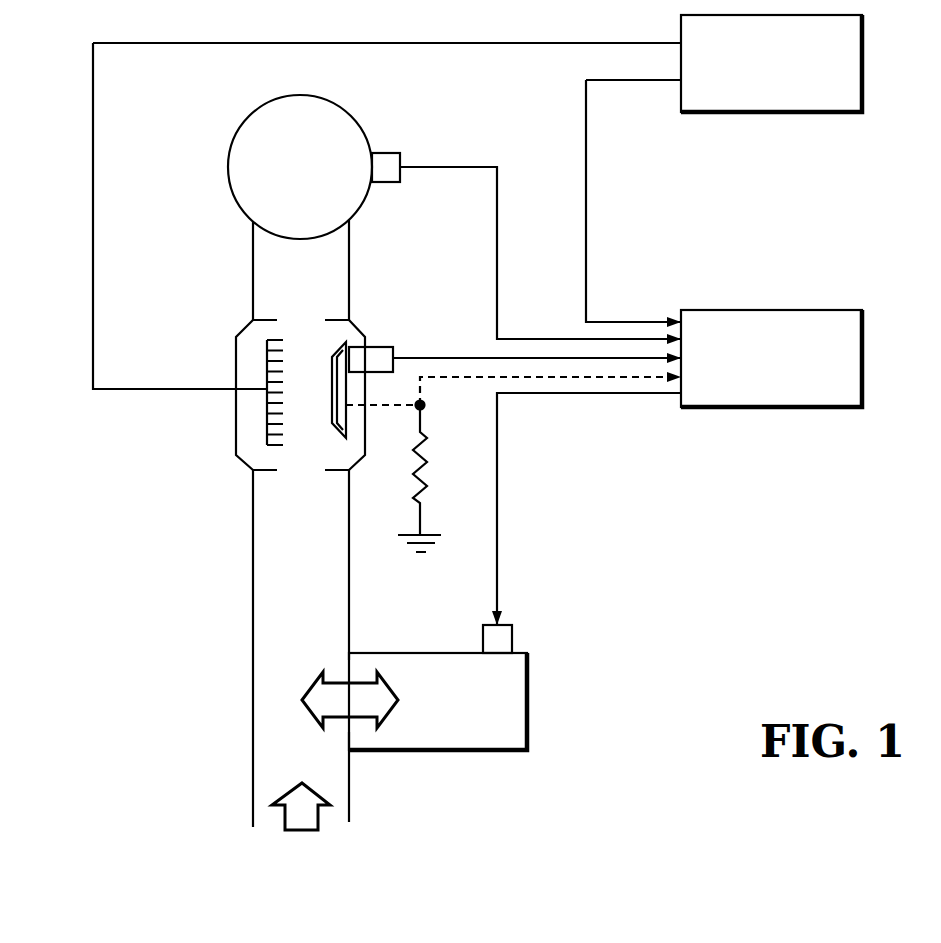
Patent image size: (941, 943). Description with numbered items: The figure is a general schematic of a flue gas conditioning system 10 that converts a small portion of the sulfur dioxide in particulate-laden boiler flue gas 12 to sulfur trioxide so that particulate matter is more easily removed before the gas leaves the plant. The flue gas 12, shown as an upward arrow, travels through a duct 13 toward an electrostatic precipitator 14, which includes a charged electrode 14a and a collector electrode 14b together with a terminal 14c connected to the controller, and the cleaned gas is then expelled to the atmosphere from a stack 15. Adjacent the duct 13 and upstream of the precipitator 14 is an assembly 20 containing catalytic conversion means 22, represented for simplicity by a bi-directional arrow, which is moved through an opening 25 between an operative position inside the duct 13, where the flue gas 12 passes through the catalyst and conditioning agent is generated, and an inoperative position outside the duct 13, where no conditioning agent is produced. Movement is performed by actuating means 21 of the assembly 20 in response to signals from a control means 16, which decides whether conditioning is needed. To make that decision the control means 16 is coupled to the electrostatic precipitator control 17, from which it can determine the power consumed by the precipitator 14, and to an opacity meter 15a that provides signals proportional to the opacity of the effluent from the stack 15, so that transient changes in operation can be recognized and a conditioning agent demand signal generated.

The system 10 is at (628, 507).
The boiler flue gas 12 is at (300, 833).
The duct 13 is at (253, 637).
The electrostatic precipitator 14 is at (226, 440).
The charged electrode 14a is at (267, 340).
The collector electrode 14b is at (347, 397).
The sensor output terminal 14c is at (383, 347).
The stack 15 is at (363, 123).
The opacity meter 15a is at (397, 153).
The control means 16 is at (736, 304).
The electrostatic precipitator control 17 is at (812, 113).
The assembly 20 is at (527, 700).
The actuating means 21 is at (486, 625).
The catalytic conversion means 22 is at (398, 694).
The opening 25 is at (340, 667).